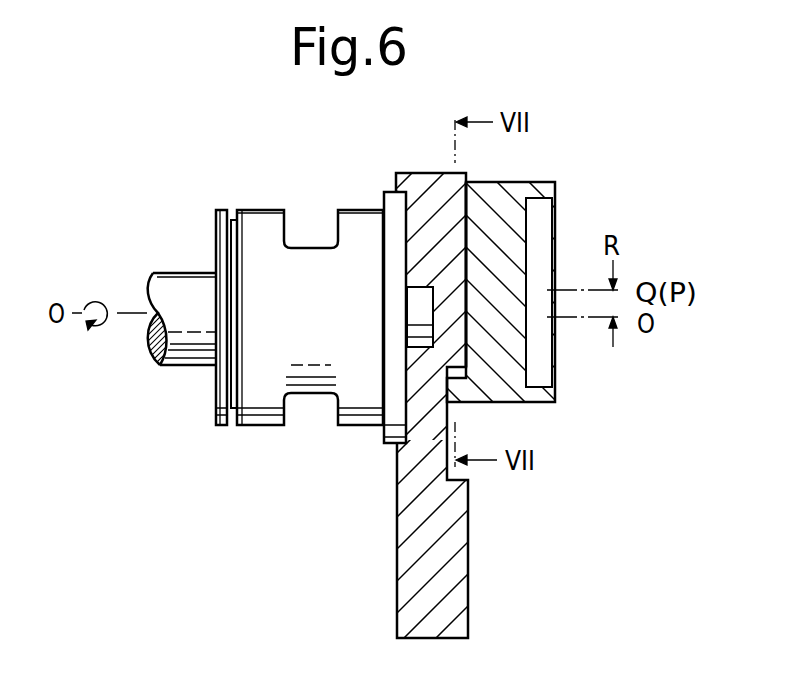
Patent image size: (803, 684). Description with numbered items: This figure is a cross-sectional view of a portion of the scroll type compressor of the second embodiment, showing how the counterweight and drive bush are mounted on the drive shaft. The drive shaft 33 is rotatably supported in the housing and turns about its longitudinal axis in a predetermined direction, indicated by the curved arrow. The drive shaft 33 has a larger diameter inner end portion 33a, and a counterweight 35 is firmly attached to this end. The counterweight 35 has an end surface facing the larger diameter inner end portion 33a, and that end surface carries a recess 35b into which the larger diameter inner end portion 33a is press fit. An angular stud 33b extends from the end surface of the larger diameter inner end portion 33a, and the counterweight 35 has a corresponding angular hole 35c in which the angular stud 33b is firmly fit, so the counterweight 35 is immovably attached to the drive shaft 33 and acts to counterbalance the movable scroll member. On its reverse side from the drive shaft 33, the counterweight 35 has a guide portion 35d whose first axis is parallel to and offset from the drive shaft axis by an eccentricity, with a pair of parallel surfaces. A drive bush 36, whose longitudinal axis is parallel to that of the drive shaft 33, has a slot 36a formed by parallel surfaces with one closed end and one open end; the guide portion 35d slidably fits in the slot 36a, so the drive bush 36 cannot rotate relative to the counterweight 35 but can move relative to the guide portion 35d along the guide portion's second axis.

The drive shaft 33 is at (184, 287).
The larger diameter inner end portion 33a is at (348, 350).
The angular stud 33b is at (398, 225).
The counterweight 35 is at (445, 577).
The recess 35b is at (392, 443).
The angular hole 35c is at (422, 293).
The guide portion 35d is at (545, 255).
The drive bush 36 is at (493, 373).
The slot 36a is at (447, 252).